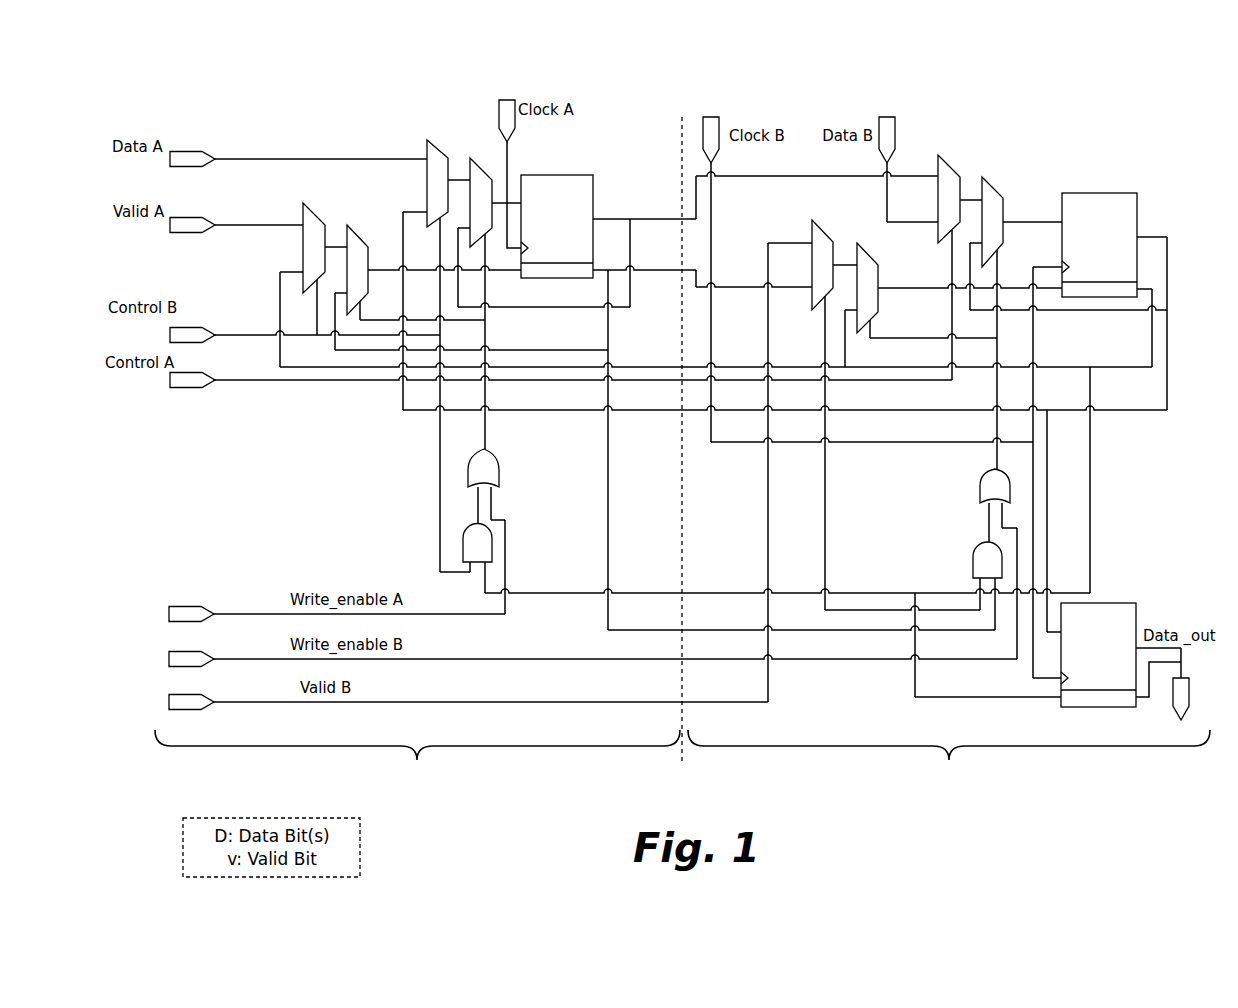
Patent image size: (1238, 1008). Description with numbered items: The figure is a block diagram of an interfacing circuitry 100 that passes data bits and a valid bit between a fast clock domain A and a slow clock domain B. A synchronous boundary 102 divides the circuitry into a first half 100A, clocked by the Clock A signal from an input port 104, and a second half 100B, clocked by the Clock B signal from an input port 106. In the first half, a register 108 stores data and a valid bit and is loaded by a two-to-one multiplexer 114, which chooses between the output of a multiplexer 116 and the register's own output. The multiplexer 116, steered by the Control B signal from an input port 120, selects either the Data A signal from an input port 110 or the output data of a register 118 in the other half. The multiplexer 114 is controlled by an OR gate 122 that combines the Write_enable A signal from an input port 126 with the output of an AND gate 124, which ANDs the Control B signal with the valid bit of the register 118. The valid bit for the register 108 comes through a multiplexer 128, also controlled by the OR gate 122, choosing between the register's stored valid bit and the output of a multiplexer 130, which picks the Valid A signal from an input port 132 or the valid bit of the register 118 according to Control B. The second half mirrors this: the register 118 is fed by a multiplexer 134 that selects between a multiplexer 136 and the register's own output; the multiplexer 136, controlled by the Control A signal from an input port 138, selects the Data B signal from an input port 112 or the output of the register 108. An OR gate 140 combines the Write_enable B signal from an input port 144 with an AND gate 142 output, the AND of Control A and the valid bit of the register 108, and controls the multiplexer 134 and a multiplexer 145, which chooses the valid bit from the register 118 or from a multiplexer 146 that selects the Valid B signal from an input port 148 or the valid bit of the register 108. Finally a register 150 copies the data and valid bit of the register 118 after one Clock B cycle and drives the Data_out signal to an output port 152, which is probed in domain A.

The interfacing circuitry 100 is at (322, 106).
The first half 100A is at (417, 759).
The second half 100B is at (949, 759).
The synchronous boundary 102 is at (680, 117).
The input port 104 is at (512, 101).
The input port 106 is at (716, 117).
The register 108 is at (548, 176).
The input port 110 is at (186, 152).
The input port 112 is at (890, 117).
The multiplexer 114 is at (474, 159).
The multiplexer 116 is at (432, 141).
The register 118 is at (1094, 194).
The input port 120 is at (194, 330).
The OR gate 122 is at (496, 467).
The AND gate 124 is at (491, 537).
The input port 126 is at (186, 608).
The multiplexer 128 is at (357, 236).
The multiplexer 130 is at (316, 212).
The input port 132 is at (188, 218).
The multiplexer 134 is at (1000, 194).
The multiplexer 136 is at (953, 167).
The input port 138 is at (202, 374).
The OR gate 140 is at (983, 490).
The AND gate 142 is at (977, 556).
The input port 144 is at (190, 653).
The multiplexer 145 is at (862, 246).
The multiplexer 146 is at (827, 232).
The input port 148 is at (190, 696).
The register 150 is at (1106, 605).
The output port 152 is at (1172, 708).